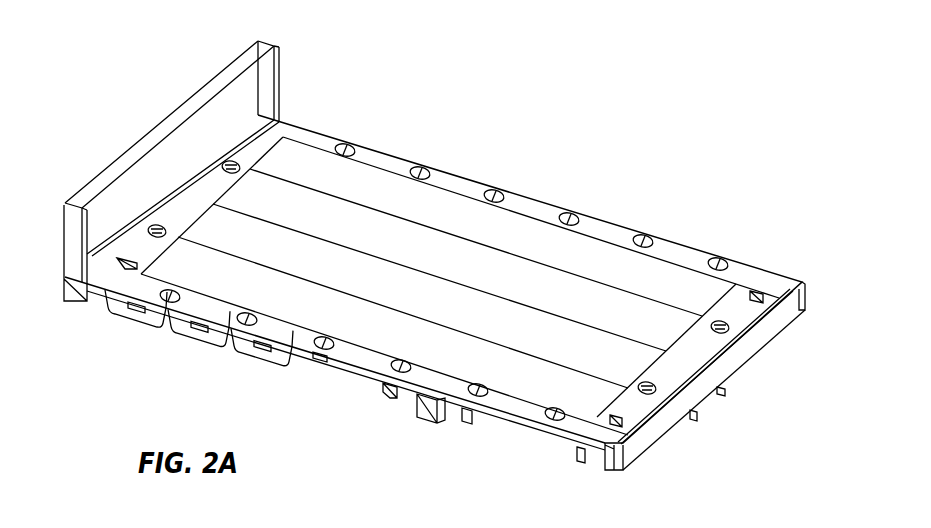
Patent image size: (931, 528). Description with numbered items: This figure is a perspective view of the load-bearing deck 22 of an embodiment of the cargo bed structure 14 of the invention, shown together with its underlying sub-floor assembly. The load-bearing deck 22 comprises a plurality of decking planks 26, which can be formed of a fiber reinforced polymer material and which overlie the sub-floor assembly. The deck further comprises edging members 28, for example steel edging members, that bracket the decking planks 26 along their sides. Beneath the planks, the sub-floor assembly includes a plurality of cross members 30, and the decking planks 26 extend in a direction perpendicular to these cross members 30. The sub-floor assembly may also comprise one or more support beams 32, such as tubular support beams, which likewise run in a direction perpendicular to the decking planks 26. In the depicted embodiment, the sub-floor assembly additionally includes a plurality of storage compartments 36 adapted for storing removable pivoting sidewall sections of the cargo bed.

The headboard wall 14 is at (237, 93).
The platform frame 22 is at (661, 223).
The side rail 26 is at (635, 368).
The frame rails 28 is at (762, 312).
The pins 30 is at (580, 459).
The bracket 32 is at (424, 428).
The clips 36 is at (218, 345).